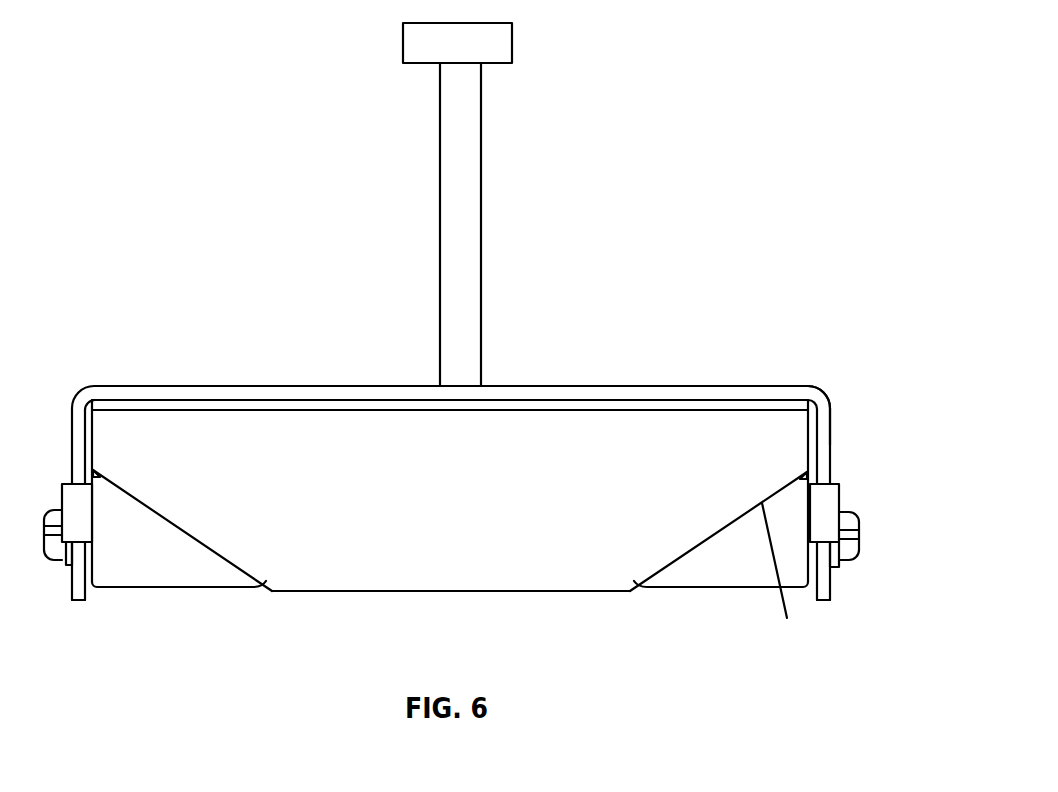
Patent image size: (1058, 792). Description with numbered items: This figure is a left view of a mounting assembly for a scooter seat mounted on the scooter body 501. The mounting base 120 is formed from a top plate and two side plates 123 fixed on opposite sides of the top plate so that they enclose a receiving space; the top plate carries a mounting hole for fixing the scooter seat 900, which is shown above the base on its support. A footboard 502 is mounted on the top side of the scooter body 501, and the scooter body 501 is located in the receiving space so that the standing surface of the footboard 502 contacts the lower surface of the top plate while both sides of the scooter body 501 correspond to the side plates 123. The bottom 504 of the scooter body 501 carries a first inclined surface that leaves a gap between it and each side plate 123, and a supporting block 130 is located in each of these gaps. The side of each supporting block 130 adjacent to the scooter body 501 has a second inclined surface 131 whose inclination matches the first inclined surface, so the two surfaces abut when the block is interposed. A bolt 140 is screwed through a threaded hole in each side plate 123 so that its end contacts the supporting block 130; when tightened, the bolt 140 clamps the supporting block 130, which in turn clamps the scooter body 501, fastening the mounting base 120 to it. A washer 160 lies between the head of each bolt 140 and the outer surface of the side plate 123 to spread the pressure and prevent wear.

The scooter seat 900 is at (403, 48).
The mounting base 120 is at (638, 387).
The side plate 123 is at (830, 443).
The scooter body 501 is at (117, 435).
The footboard 502 is at (530, 405).
The bottom 504 is at (210, 530).
The supporting block 130 is at (723, 560).
The second inclined surface 131 is at (788, 530).
The washer 160 is at (832, 557).
The bolt 140 is at (845, 530).